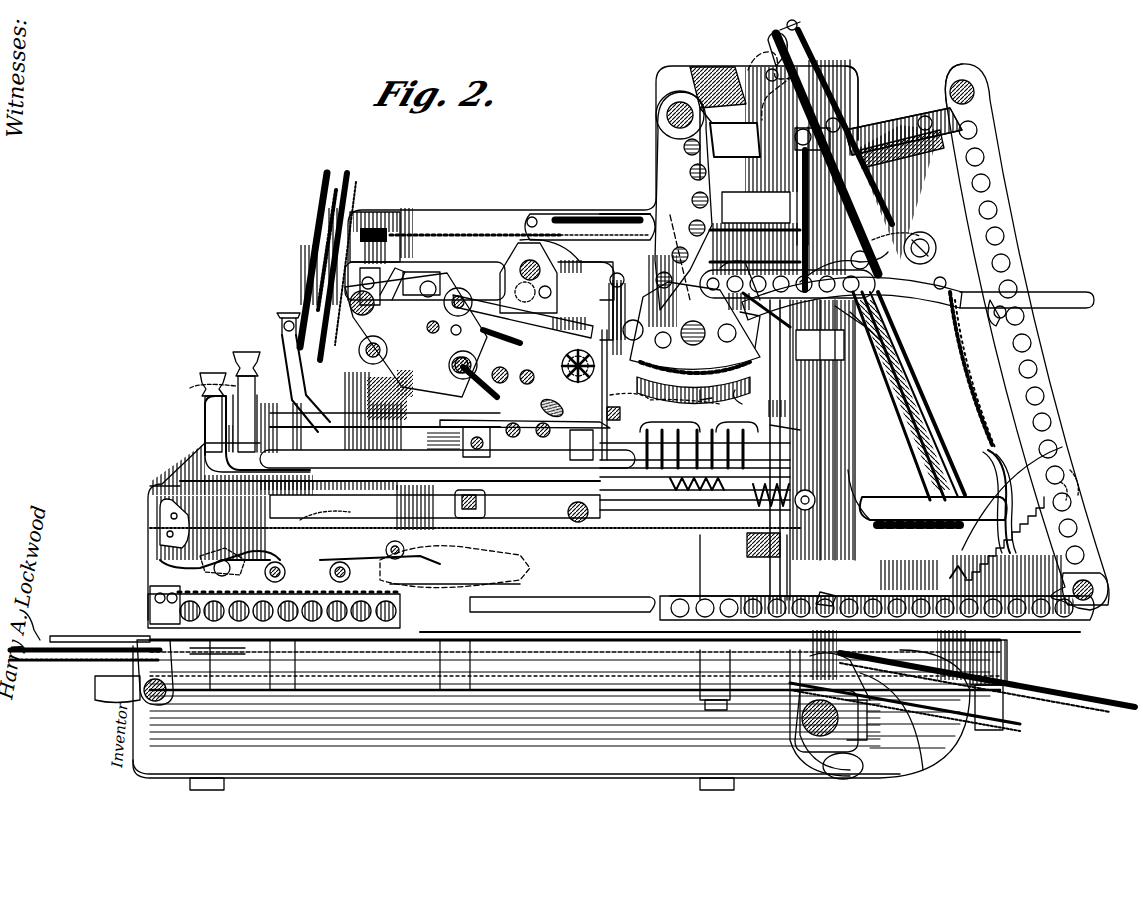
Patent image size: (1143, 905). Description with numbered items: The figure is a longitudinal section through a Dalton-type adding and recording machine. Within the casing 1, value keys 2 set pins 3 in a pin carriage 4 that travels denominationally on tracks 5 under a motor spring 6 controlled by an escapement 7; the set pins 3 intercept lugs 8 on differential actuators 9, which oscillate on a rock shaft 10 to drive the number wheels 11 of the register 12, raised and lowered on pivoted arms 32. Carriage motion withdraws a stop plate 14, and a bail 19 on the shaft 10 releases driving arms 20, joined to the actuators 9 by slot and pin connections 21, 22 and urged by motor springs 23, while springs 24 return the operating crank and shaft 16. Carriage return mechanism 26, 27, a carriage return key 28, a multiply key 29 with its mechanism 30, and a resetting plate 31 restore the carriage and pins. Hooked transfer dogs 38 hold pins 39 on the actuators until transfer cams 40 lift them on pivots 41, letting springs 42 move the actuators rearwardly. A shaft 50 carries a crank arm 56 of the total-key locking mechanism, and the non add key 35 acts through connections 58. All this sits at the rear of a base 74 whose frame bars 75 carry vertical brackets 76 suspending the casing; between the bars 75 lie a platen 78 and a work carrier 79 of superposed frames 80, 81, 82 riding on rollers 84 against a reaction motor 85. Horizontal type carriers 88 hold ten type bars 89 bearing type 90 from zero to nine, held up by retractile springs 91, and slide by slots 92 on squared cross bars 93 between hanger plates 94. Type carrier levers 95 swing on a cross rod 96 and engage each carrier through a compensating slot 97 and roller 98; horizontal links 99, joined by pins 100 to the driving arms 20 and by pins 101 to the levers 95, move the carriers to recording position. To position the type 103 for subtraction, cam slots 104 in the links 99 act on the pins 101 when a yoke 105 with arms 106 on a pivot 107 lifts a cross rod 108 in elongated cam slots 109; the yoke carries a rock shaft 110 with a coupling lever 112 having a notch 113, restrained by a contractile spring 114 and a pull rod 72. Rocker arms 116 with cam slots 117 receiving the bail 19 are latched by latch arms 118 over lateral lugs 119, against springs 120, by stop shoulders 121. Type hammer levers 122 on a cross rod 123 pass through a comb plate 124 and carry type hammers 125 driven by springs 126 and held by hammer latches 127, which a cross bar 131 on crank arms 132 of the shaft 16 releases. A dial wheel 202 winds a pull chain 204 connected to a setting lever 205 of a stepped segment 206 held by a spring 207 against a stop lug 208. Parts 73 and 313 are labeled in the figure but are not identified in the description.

The casing 1 is at (662, 78).
The value keys 2 is at (200, 392).
The set pins 3 is at (740, 401).
The pin carriage 4 is at (706, 402).
The tracks 5 is at (627, 439).
The motor spring 6 is at (695, 455).
The escapement 7 is at (690, 500).
The lugs 8 is at (750, 334).
The differential toothed actuators 9 is at (675, 317).
The rock shaft 10 is at (668, 118).
The number wheels 11 is at (575, 379).
The register 12 is at (504, 377).
The stop plate 14 is at (665, 404).
The operating shaft 16 is at (484, 506).
The actuator releasing and returning bail 19 is at (767, 74).
The actuator driving arms 20 is at (750, 129).
The slot and pin connection 21 is at (672, 226).
The slot and pin connection 22 is at (572, 269).
The motor springs 23 is at (856, 202).
The springs 24 is at (812, 450).
The carriage return mechanism 26 is at (447, 460).
The carriage return mechanism 27 is at (842, 474).
The carriage return key 28 is at (289, 312).
The multiply key 29 is at (212, 372).
The mechanism 30 is at (352, 422).
The resetting plate 31 is at (681, 347).
The pivoted arms 32 is at (480, 292).
The non add key 35 is at (248, 352).
The hooked transfer dogs 38 is at (528, 279).
The pins 39 is at (592, 300).
The transfer cams 40 is at (579, 395).
The pivots 41 is at (432, 286).
The springs 42 is at (779, 167).
The shaft 50 is at (407, 314).
The crank arm 56 is at (392, 214).
The connections 58 is at (412, 212).
The pull rod 72 is at (580, 214).
The segment plate 73 is at (691, 343).
The base 74 is at (561, 712).
The frame bars 75 is at (208, 766).
The vertical brackets 76 is at (905, 372).
The platen 78 is at (155, 672).
The work carrier 79 is at (540, 700).
The horizontal frame 80 is at (722, 702).
The horizontal frame 81 is at (836, 652).
The horizontal frame 82 is at (662, 640).
The rollers 84 is at (50, 662).
The reaction motor 85 is at (1050, 700).
The type carriers 88 is at (578, 596).
The type bars 89 is at (162, 560).
The type 90 is at (305, 650).
The retractile springs 91 is at (150, 610).
The slots 92 is at (620, 596).
The squared cross bars 93 is at (455, 576).
The hanger plates 94 is at (722, 596).
The type carrier levers 95 is at (1016, 400).
The cross rod 96 is at (978, 93).
The compensating slot 97 is at (1088, 576).
The roller 98 is at (1090, 636).
The horizontal links 99 is at (920, 290).
The pins 100 is at (781, 298).
The pins 101 is at (1022, 296).
The type 103 is at (232, 650).
The cam slots 104 is at (1006, 316).
The yoke 105 is at (884, 346).
The yoke arms 106 is at (890, 360).
The pivot 107 is at (820, 345).
The cross rod 108 is at (878, 316).
The elongated cam slots 109 is at (942, 276).
The horizontal rock shaft 110 is at (930, 242).
The coupling lever 112 is at (884, 330).
The notch 113 is at (852, 234).
The contractile spring 114 is at (896, 236).
The vertical rocker arms 116 is at (862, 176).
The cam slots 117 is at (842, 66).
The latch arms 118 is at (770, 52).
The lateral lugs 119 is at (818, 54).
The springs 120 is at (800, 60).
The stop shoulders 121 is at (788, 24).
The type hammer levers 122 is at (229, 555).
The cross rod 123 is at (249, 566).
The guiding comb plate 124 is at (150, 488).
The type hammers 125 is at (160, 520).
The springs 126 is at (178, 484).
The type hammer latches 127 is at (380, 558).
The cross bar 131 is at (356, 510).
The crank arms 132 is at (475, 503).
The dial wheel 202 is at (322, 182).
The pull chain 204 is at (482, 228).
The setting lever 205 is at (996, 485).
The stepped segment 206 is at (1036, 468).
The spring 207 is at (971, 521).
The stop lug 208 is at (1062, 488).
The stud 313 is at (826, 590).